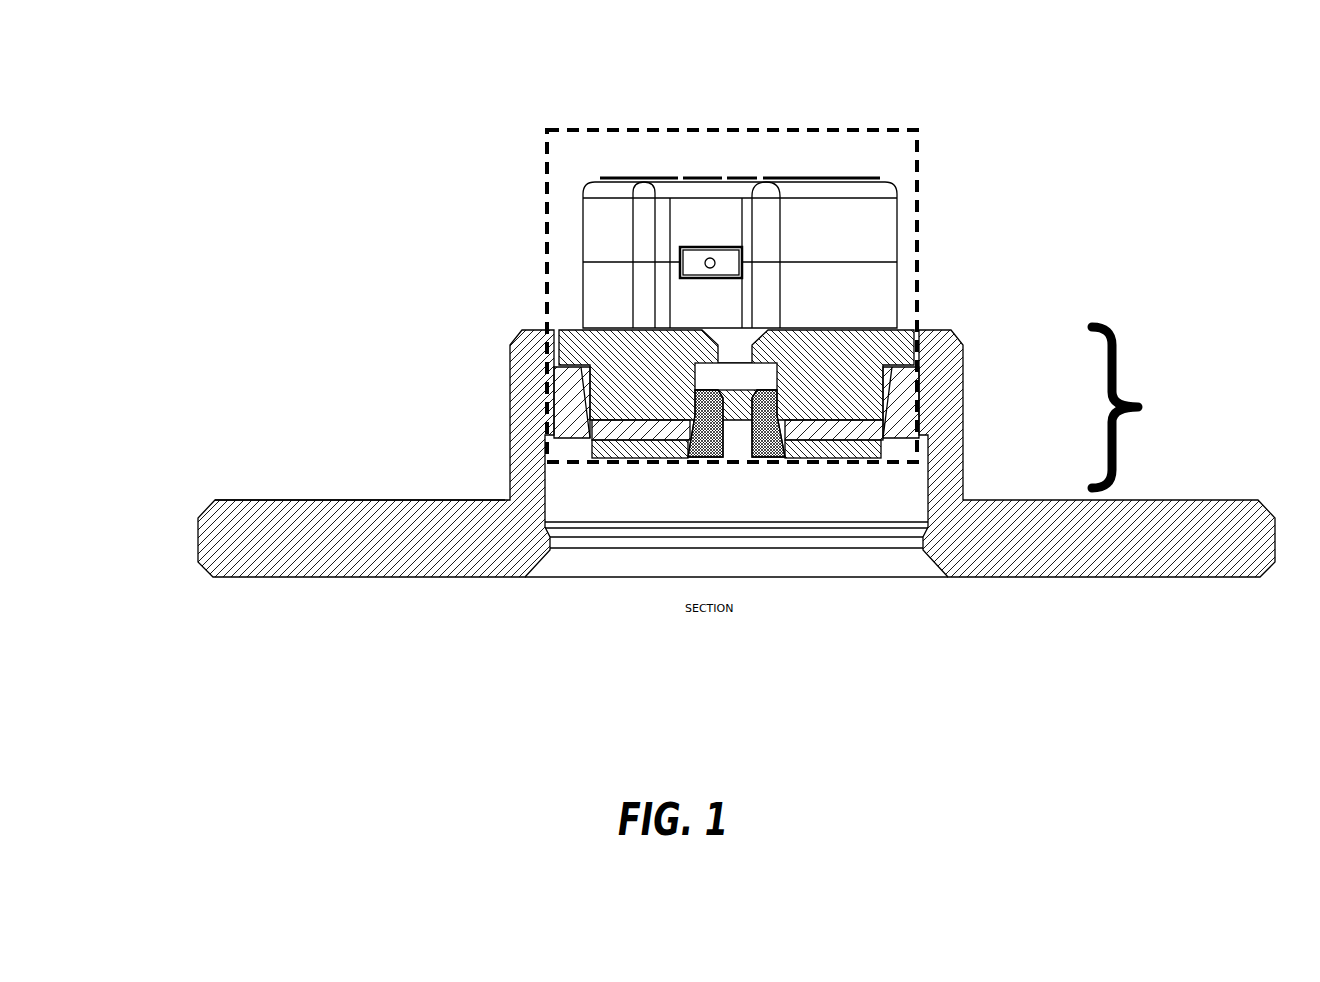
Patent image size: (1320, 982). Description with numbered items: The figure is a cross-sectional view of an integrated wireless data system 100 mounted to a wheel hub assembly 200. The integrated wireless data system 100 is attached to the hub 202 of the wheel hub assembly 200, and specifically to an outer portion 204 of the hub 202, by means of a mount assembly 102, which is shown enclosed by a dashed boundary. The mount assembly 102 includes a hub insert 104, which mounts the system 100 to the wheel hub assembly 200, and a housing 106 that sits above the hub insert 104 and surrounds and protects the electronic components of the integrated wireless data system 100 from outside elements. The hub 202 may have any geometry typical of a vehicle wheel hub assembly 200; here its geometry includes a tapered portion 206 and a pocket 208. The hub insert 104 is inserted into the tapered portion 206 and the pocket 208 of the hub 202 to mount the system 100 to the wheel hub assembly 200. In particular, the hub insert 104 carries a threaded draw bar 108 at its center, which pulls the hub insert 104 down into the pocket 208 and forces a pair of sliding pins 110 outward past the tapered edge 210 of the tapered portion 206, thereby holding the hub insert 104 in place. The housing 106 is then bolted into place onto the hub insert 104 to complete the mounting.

The integrated wireless data system 100 is at (532, 125).
The mount assembly 102 is at (918, 173).
The hub insert 104 is at (840, 365).
The housing 106 is at (601, 228).
The threaded draw bar 108 is at (788, 416).
The sliding pins 110 is at (613, 436).
The wheel hub assembly 200 is at (285, 590).
The hub 202 is at (273, 522).
The outer portion 204 is at (1140, 407).
The tapered portion 206 is at (762, 440).
The pocket 208 is at (578, 376).
The tapered edge 210 is at (887, 404).